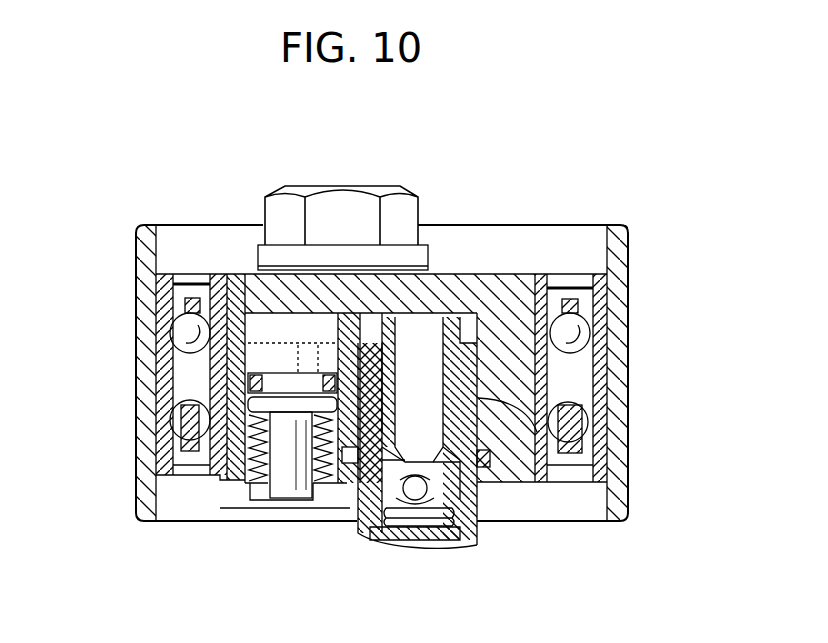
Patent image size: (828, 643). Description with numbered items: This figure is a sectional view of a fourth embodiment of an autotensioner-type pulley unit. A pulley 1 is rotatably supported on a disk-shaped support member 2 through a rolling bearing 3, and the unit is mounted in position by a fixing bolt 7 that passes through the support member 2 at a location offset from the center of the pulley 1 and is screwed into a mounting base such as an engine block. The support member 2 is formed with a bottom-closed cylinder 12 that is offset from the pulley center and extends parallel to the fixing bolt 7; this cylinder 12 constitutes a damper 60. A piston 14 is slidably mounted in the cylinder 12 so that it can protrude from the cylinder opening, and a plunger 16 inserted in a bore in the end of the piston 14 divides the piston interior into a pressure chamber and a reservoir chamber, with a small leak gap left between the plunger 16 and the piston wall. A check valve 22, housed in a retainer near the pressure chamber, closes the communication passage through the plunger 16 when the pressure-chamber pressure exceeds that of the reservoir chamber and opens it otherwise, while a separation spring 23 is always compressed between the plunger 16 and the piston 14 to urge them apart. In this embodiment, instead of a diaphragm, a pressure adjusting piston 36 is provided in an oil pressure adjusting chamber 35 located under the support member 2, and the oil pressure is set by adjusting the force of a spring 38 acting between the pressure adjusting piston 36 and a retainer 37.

The pulley 1 is at (613, 315).
The support member 2 is at (497, 303).
The rolling bearing 3 is at (573, 277).
The fixing bolt 7 is at (347, 220).
The cylinder 12 is at (580, 447).
The piston 14 is at (478, 497).
The plunger 16 is at (368, 530).
The check valve 22 is at (416, 500).
The separation spring 23 is at (437, 510).
The oil pressure adjusting chamber 35 is at (230, 347).
The pressure adjusting piston 36 is at (277, 368).
The retainer 37 is at (327, 490).
The spring 38 is at (247, 487).
The damper 60 is at (482, 388).